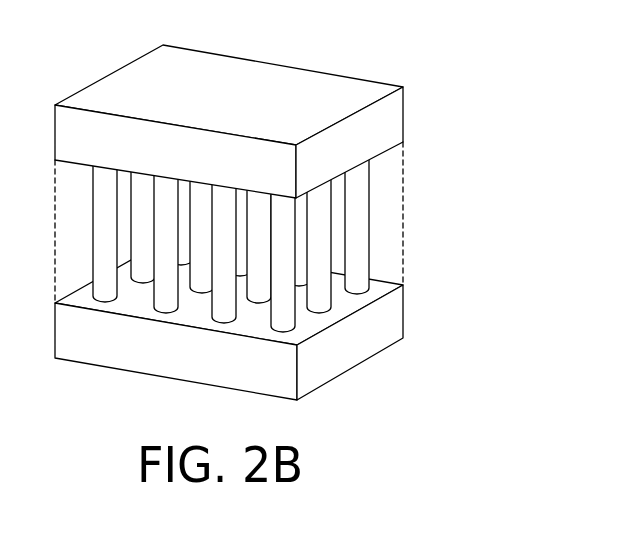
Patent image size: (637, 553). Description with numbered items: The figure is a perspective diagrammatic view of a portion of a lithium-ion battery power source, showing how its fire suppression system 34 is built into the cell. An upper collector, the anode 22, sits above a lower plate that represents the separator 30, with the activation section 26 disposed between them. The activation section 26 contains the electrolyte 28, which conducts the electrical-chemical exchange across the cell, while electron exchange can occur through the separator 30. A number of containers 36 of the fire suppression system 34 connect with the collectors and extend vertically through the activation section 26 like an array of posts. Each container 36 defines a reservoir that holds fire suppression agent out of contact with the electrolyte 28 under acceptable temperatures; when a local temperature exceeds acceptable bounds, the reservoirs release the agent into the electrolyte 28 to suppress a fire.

The anode 22 is at (92, 125).
The activation section 26 is at (420, 157).
The electrolyte 28 is at (389, 212).
The separator 30 is at (274, 296).
The fire suppression system 34 is at (388, 290).
The containers 36 is at (335, 305).